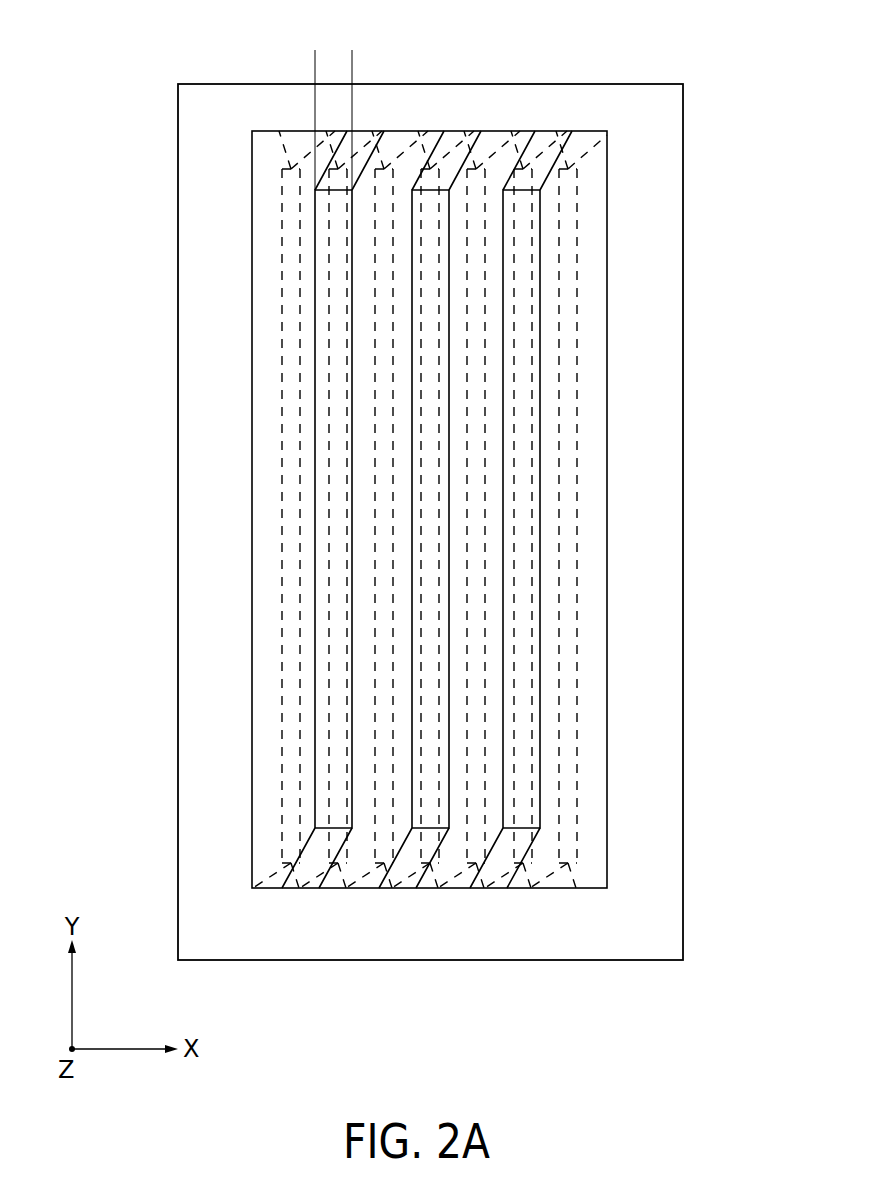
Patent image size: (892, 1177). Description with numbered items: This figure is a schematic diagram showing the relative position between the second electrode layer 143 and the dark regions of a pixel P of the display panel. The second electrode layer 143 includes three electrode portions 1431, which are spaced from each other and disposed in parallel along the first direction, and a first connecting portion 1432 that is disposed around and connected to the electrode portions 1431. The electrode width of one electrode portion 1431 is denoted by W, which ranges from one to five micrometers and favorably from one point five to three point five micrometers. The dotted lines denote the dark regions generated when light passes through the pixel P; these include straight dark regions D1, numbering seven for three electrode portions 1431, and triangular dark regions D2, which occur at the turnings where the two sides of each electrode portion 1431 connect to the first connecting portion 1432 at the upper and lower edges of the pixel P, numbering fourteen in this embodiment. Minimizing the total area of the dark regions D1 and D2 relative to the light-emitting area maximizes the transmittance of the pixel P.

The pixel P is at (112, 58).
The second electrode layer 143 is at (542, 509).
The electrode portion 1431 is at (450, 328).
The first connecting portion 1432 is at (663, 404).
The electrode width W is at (395, 58).
The straight dark region D1 is at (530, 257).
The triangular dark region D2 is at (613, 146).